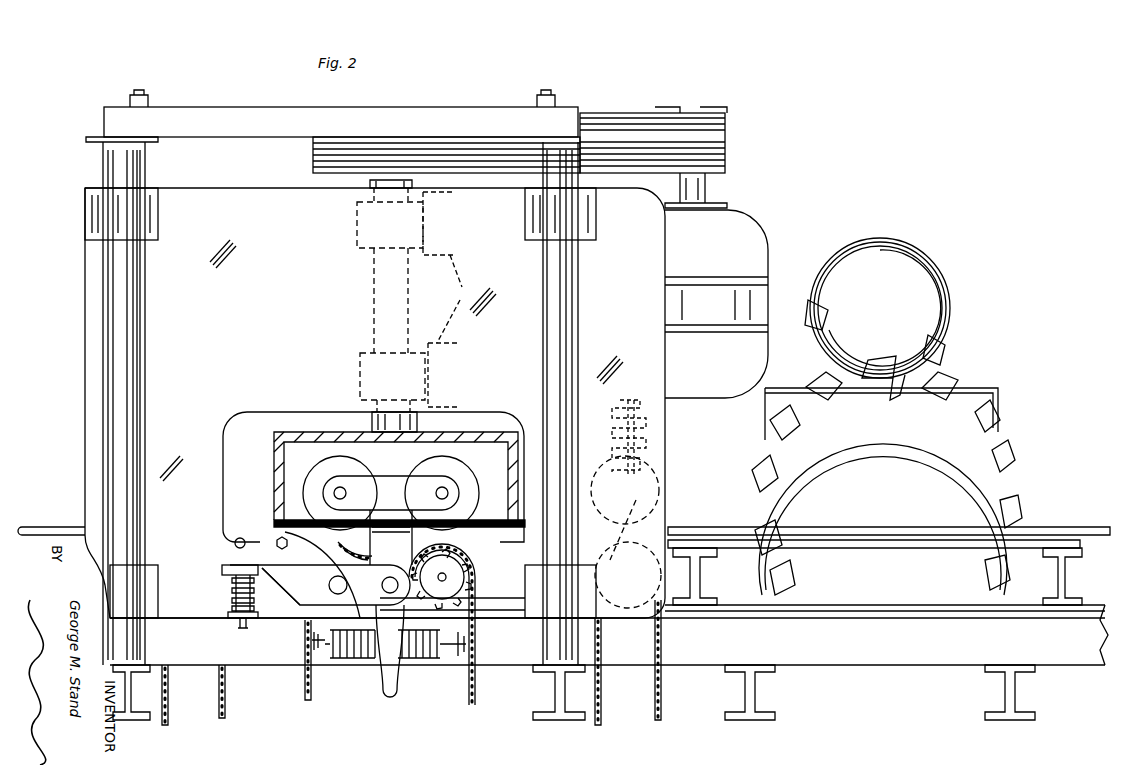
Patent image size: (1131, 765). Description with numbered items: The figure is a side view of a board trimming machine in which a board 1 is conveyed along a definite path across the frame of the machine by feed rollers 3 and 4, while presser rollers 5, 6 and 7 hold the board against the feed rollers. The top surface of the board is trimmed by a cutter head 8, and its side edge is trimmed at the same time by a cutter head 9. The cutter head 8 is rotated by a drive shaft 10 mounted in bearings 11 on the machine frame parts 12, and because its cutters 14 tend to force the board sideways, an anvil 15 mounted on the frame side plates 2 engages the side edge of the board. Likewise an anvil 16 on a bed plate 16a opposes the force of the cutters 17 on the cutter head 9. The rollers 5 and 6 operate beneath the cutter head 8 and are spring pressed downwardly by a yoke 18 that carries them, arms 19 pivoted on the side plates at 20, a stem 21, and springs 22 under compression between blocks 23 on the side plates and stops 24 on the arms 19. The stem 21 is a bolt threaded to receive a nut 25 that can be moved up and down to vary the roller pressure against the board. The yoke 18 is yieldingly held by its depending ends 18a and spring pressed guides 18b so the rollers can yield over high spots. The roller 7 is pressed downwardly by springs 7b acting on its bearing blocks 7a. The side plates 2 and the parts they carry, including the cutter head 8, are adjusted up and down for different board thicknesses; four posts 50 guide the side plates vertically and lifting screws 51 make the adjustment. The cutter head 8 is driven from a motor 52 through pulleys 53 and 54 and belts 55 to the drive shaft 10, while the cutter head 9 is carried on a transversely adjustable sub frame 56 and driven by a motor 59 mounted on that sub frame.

The board 1 is at (51, 509).
The frame side plates 2 is at (290, 304).
The feed roller 3 is at (320, 575).
The feed roller 4 is at (423, 623).
The presser roller 5 is at (342, 489).
The presser roller 6 is at (410, 489).
The presser roller 7 is at (640, 504).
The bearing blocks 7a is at (623, 569).
The springs 7b is at (640, 400).
The cutter head 8 is at (373, 457).
The cutter head 9 is at (1029, 468).
The drive shaft 10 is at (374, 325).
The bearings 11 is at (357, 228).
The machine frame parts 12 is at (448, 299).
The cutters 14 is at (396, 479).
The anvil 15 is at (385, 479).
The anvil 16 is at (883, 519).
The bed plate 16a is at (889, 566).
The cutters 17 is at (887, 447).
The yoke 18 is at (400, 553).
The depending ends 18a is at (432, 665).
The spring pressed guides 18b is at (346, 665).
The arms 19 is at (283, 609).
The pivot 20 is at (347, 585).
The stem 21 is at (231, 557).
The springs 22 is at (227, 594).
The blocks 23 is at (221, 631).
The stops 24 is at (261, 554).
The nut 25 is at (234, 634).
The posts 50 is at (560, 428).
The lifting screws 51 is at (341, 107).
The motor 52 is at (720, 314).
The pulley 53 is at (670, 142).
The pulley 54 is at (425, 157).
The belts 55 is at (643, 97).
The sub frame 56 is at (904, 406).
The motor 59 is at (899, 308).